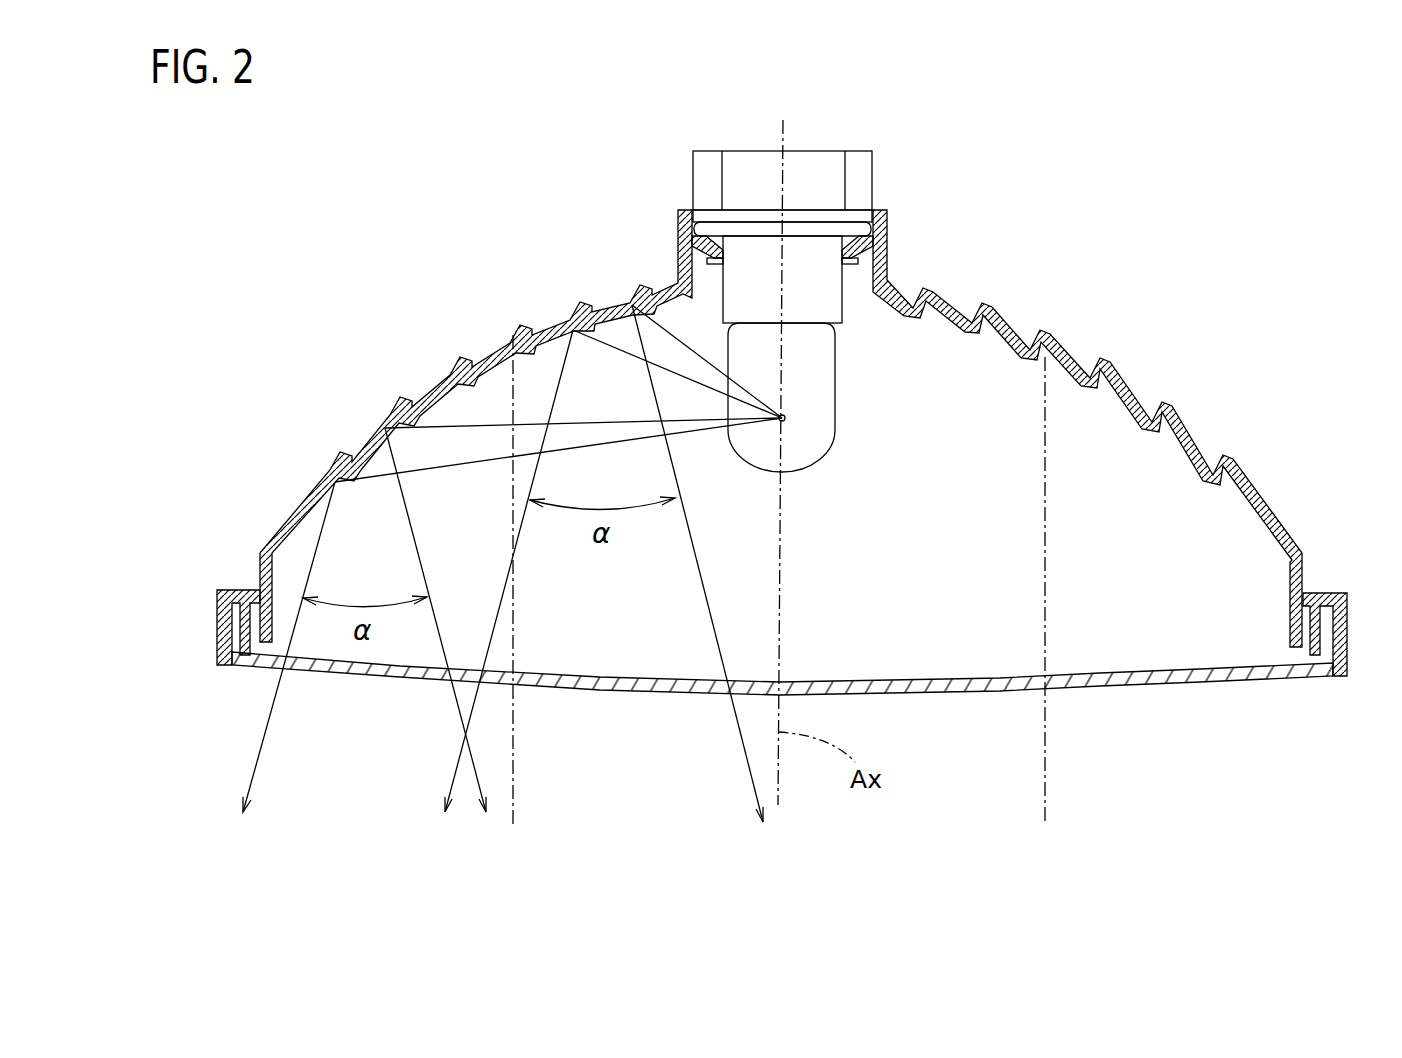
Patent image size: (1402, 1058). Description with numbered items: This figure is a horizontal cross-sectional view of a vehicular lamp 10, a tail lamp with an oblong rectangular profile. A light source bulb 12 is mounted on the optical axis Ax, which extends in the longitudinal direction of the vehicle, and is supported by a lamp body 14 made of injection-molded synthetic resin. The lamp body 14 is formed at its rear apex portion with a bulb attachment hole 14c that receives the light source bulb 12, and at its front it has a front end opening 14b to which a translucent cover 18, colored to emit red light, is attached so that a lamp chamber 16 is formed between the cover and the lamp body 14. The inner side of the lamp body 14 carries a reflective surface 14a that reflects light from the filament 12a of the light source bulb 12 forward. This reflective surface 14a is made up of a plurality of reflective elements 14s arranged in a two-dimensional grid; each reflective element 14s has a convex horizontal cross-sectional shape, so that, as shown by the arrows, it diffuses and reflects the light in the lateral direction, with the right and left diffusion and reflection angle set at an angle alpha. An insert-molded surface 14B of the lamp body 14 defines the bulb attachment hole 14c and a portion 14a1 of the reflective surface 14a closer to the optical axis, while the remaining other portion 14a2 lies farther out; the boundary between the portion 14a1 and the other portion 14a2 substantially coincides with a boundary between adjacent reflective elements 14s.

The vehicular lamp 10 is at (1197, 272).
The light source bulb 12 is at (755, 468).
The filament 12a is at (786, 415).
The lamp body 14 is at (1182, 400).
The reflective surface 14a is at (1002, 590).
The portion closer to the optical axis 14a1 is at (945, 316).
The other portion 14a2 is at (1150, 403).
The reflective element 14s is at (1068, 367).
The front end opening 14b is at (1290, 630).
The bulb attachment hole 14c is at (823, 225).
The insert-molded surface 14B is at (1045, 845).
The lamp chamber 16 is at (765, 649).
The translucent cover 18 is at (1173, 689).